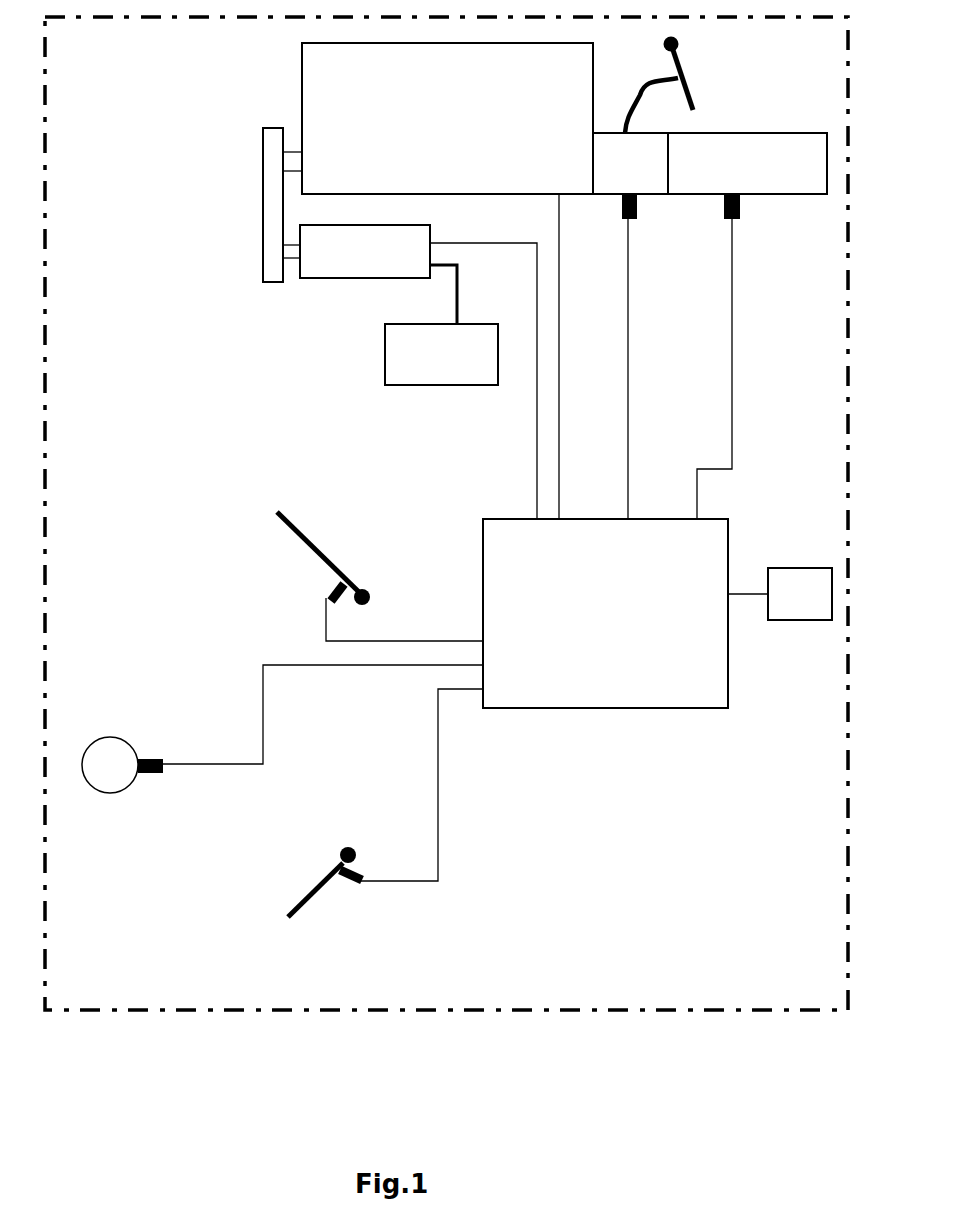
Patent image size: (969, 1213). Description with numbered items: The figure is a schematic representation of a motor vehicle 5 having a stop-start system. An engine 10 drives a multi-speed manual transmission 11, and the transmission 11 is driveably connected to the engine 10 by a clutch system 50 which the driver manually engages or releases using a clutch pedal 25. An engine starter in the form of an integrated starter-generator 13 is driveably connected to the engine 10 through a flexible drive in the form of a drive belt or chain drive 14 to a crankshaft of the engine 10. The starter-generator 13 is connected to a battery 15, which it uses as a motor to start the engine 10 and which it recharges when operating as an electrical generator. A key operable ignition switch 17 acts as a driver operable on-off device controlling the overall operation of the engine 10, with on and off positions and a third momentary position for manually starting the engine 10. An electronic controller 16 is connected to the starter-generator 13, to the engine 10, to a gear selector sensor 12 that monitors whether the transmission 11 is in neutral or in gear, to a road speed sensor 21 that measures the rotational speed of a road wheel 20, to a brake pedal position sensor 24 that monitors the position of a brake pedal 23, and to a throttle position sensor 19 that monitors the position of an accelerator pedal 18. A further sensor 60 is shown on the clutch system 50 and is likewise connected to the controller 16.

The motor vehicle 5 is at (458, 1015).
The engine 10 is at (433, 140).
The multi-speed manual transmission 11 is at (698, 177).
The gear selector sensor 12 is at (733, 219).
The integrated starter-generator 13 is at (350, 270).
The drive belt or chain drive 14 is at (265, 224).
The battery 15 is at (426, 372).
The electronic controller 16 is at (590, 617).
The key operable ignition switch 17 is at (785, 605).
The accelerator pedal 18 is at (295, 535).
The throttle position sensor 19 is at (325, 597).
The road wheel 20 is at (107, 790).
The road speed sensor 21 is at (152, 773).
The brake pedal 23 is at (317, 892).
The brake pedal position sensor 24 is at (357, 881).
The clutch pedal 25 is at (690, 88).
The clutch system 50 is at (609, 177).
The clutch sensor 60 is at (632, 219).